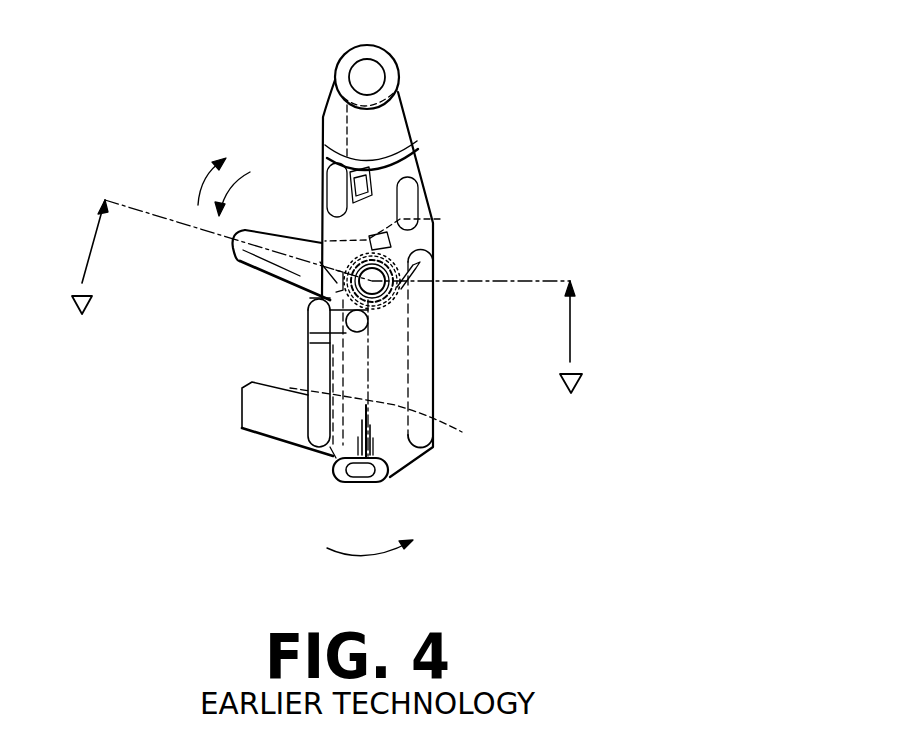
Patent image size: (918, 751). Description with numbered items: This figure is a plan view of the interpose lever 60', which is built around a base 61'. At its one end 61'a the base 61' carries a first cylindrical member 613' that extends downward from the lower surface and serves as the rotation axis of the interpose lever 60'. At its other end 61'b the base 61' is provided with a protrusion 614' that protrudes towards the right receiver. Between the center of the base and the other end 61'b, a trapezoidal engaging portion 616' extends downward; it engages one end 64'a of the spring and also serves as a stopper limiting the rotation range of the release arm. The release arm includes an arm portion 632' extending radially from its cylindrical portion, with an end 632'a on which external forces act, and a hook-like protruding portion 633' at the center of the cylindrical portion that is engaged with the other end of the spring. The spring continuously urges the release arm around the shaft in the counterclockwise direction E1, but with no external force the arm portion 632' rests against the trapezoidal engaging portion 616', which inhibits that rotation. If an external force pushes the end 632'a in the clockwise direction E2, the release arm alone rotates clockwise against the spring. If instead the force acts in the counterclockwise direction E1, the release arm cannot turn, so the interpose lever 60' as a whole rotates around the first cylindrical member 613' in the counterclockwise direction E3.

The interpose lever 60' is at (559, 95).
The base 61' is at (363, 278).
The one end 61'a is at (401, 69).
The other end 61'b is at (342, 497).
The first cylindrical member 613' is at (311, 72).
The hook-like protruding portion 633' is at (426, 245).
The arm portion 632' is at (278, 278).
The end of the arm portion 632'a is at (181, 271).
The trapezoidal engaging portion 616' is at (261, 344).
The protrusion 614' is at (240, 448).
The one end of the spring 64'a is at (410, 419).
The counterclockwise direction E1 is at (230, 180).
The clockwise direction E2 is at (202, 180).
The counterclockwise direction E3 is at (360, 558).